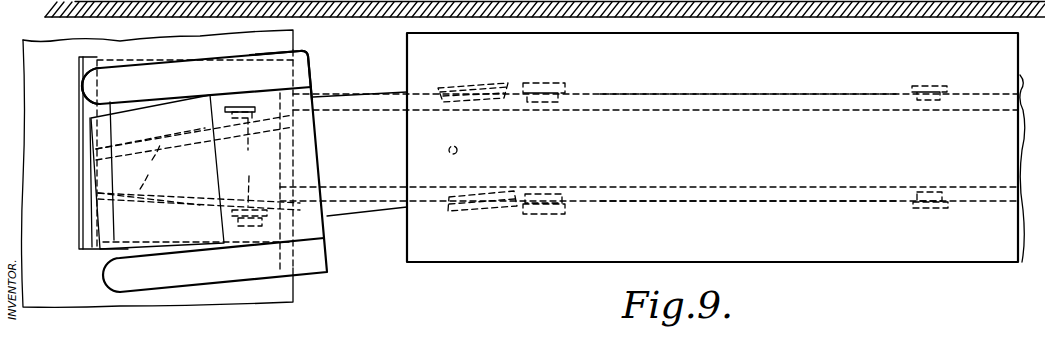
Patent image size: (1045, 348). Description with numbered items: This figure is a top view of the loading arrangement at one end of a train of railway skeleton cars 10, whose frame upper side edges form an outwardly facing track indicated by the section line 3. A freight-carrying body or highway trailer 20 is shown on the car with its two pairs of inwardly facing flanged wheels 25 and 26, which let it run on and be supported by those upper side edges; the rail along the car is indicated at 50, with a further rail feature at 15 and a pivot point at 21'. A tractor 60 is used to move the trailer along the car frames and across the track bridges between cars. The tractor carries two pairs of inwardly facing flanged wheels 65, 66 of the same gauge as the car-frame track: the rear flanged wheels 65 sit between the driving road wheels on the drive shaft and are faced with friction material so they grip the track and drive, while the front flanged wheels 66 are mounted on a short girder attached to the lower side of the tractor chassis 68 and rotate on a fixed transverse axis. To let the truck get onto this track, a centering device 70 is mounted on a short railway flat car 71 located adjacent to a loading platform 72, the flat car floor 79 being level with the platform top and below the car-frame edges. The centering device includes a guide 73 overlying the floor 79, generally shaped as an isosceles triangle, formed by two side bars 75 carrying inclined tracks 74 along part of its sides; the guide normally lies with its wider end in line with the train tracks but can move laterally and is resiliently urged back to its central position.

The section indicator 3 is at (905, 17).
The railway skeleton car 10 is at (1022, 84).
The rails 15 is at (753, 186).
The freight-carrying body or container 20 is at (768, 73).
The pivot pin 21' is at (475, 153).
The flanged wheels 25 is at (930, 100).
The flanged wheels 26 is at (566, 83).
The rail 50 is at (339, 95).
The tractor 60 is at (190, 183).
The flanged wheels 65 is at (497, 86).
The front flanged wheels 66 is at (246, 166).
The chassis 68 is at (360, 206).
The centering device 70 is at (300, 145).
The railway flat car 71 is at (300, 73).
The loading platform 72 is at (56, 297).
The guide 73 is at (130, 138).
The inclined tracks 74 is at (203, 120).
The side bars 75 is at (142, 168).
The floor 79 is at (122, 63).